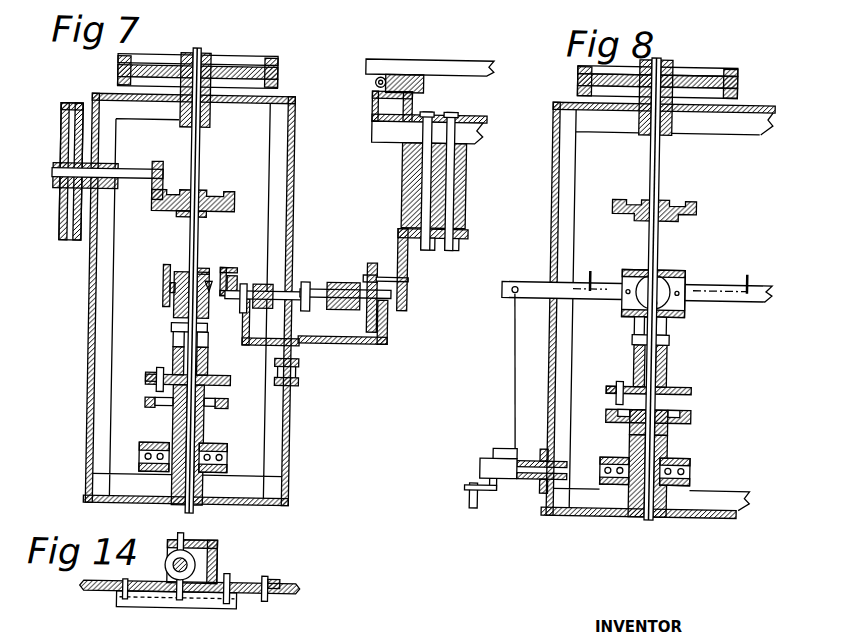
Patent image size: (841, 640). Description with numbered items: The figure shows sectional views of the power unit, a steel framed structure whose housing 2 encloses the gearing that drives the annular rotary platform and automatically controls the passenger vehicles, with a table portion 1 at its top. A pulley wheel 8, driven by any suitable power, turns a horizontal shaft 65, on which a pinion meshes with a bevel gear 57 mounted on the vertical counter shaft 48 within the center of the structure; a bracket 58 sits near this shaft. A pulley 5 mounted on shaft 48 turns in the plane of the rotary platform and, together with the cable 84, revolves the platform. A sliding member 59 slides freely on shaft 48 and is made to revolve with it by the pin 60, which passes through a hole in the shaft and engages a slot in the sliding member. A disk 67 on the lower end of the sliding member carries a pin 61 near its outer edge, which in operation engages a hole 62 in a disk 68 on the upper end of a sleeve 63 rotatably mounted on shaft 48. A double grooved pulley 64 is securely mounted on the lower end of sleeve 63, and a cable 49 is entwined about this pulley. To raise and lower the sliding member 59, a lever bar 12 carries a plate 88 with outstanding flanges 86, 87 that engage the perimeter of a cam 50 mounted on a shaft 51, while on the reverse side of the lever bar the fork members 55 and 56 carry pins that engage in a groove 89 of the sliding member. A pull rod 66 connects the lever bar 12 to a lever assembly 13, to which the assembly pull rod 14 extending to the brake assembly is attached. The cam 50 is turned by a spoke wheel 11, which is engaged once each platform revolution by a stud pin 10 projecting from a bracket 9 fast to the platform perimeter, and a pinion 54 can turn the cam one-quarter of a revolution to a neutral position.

In FIG. 7, the table top 1 is at (428, 58).
In FIG. 7, the housing 2 is at (94, 96).
In FIG. 8, the housing 2 is at (557, 102).
In FIG. 7, the pulley 5 is at (153, 67).
In FIG. 8, the pulley 5 is at (707, 76).
In FIG. 7, the pulley wheel 8 is at (60, 130).
In FIG. 7, the bracket 9 is at (408, 268).
In FIG. 7, the stud pin 10 is at (408, 301).
In FIG. 7, the spoke wheel 11 is at (389, 339).
In FIG. 8, the lever bar 12 is at (528, 286).
In FIG. 14, the lever bar 12 is at (250, 578).
In FIG. 8, the lever assembly 13 is at (487, 461).
In FIG. 8, the assembly pull rod 14 is at (446, 500).
In FIG. 7, the vertical counter shaft 48 is at (198, 51).
In FIG. 8, the vertical counter shaft 48 is at (658, 61).
In FIG. 14, the vertical counter shaft 48 is at (177, 522).
In FIG. 7, the cable 49 is at (231, 467).
In FIG. 8, the cable 49 is at (685, 481).
In FIG. 7, the cam 50 is at (238, 283).
In FIG. 8, the cam 50 is at (650, 288).
In FIG. 7, the shaft 51 is at (324, 312).
In FIG. 8, the shaft 51 is at (631, 311).
In FIG. 7, the pinion 54 is at (303, 346).
In FIG. 7, the fork member 55 is at (213, 270).
In FIG. 7, the fork member 56 is at (163, 268).
In FIG. 14, the fork member 56 is at (217, 553).
In FIG. 7, the bevel gear 57 is at (215, 192).
In FIG. 8, the bevel gear 57 is at (681, 203).
In FIG. 7, the bracket 58 is at (153, 168).
In FIG. 7, the sliding member 59 is at (206, 273).
In FIG. 8, the sliding member 59 is at (665, 374).
In FIG. 14, the sliding member 59 is at (168, 558).
In FIG. 7, the pin 60 is at (172, 327).
In FIG. 8, the pin 60 is at (634, 339).
In FIG. 7, the pin 61 is at (159, 368).
In FIG. 8, the pin 61 is at (619, 381).
In FIG. 7, the hole 62 is at (157, 397).
In FIG. 8, the hole 62 is at (684, 410).
In FIG. 7, the sleeve 63 is at (177, 437).
In FIG. 8, the sleeve 63 is at (640, 440).
In FIG. 7, the double grooved pulley 64 is at (143, 446).
In FIG. 8, the double grooved pulley 64 is at (688, 458).
In FIG. 7, the horizontal shaft 65 is at (56, 172).
In FIG. 8, the pull rod 66 is at (514, 339).
In FIG. 7, the disk 67 is at (147, 375).
In FIG. 8, the disk 67 is at (612, 392).
In FIG. 7, the disk 68 is at (174, 405).
In FIG. 8, the disk 68 is at (632, 422).
In FIG. 7, the cable 84 is at (272, 77).
In FIG. 8, the cable 84 is at (736, 89).
In FIG. 7, the flange 86 is at (233, 267).
In FIG. 8, the flange 86 is at (671, 273).
In FIG. 7, the flange 87 is at (243, 308).
In FIG. 8, the flange 87 is at (678, 316).
In FIG. 8, the plate 88 is at (685, 280).
In FIG. 14, the plate 88 is at (234, 607).
In FIG. 7, the groove 89 is at (214, 300).
In FIG. 14, the groove 89 is at (165, 568).